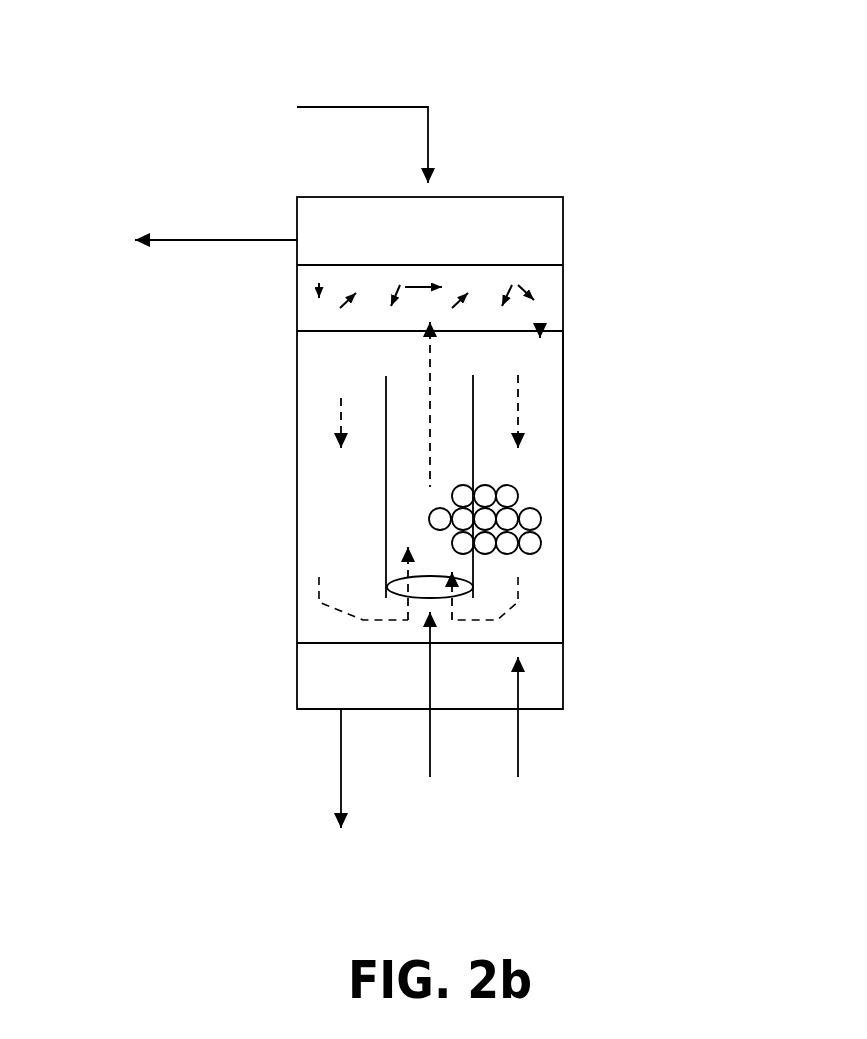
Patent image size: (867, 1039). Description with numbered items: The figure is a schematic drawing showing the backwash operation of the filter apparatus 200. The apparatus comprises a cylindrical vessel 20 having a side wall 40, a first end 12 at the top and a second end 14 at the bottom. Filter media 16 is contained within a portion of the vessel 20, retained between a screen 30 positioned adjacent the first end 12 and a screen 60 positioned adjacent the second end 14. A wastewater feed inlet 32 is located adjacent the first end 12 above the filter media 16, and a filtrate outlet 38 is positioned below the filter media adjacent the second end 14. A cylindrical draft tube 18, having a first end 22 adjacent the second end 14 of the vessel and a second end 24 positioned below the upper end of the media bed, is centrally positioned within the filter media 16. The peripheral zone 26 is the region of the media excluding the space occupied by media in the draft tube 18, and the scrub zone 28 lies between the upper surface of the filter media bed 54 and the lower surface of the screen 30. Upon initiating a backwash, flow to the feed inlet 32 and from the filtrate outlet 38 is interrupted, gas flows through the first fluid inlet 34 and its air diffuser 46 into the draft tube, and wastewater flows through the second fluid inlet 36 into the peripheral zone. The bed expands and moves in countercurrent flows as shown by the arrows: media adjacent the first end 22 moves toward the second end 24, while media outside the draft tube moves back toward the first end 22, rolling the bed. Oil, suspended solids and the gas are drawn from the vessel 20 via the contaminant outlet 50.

The apparatus 200 is at (607, 197).
The first end 12 is at (295, 220).
The wastewater feed inlet 32 is at (363, 107).
The contaminant outlet 50 is at (163, 242).
The screen 30 is at (295, 266).
The scrub zone 28 is at (563, 297).
The filter media bed 54 is at (295, 330).
The side wall 40 is at (563, 385).
The vessel 20 is at (567, 463).
The second end 24 is at (386, 376).
The peripheral zone 26 is at (342, 487).
The draft tube 18 is at (386, 531).
The first end 22 is at (386, 598).
The filter media 16 is at (541, 519).
The air diffuser 46 is at (473, 580).
The first fluid inlet 34 is at (430, 745).
The screen 60 is at (295, 643).
The second fluid inlet 36 is at (518, 677).
The second end 14 is at (295, 688).
The filtrate outlet 38 is at (340, 800).